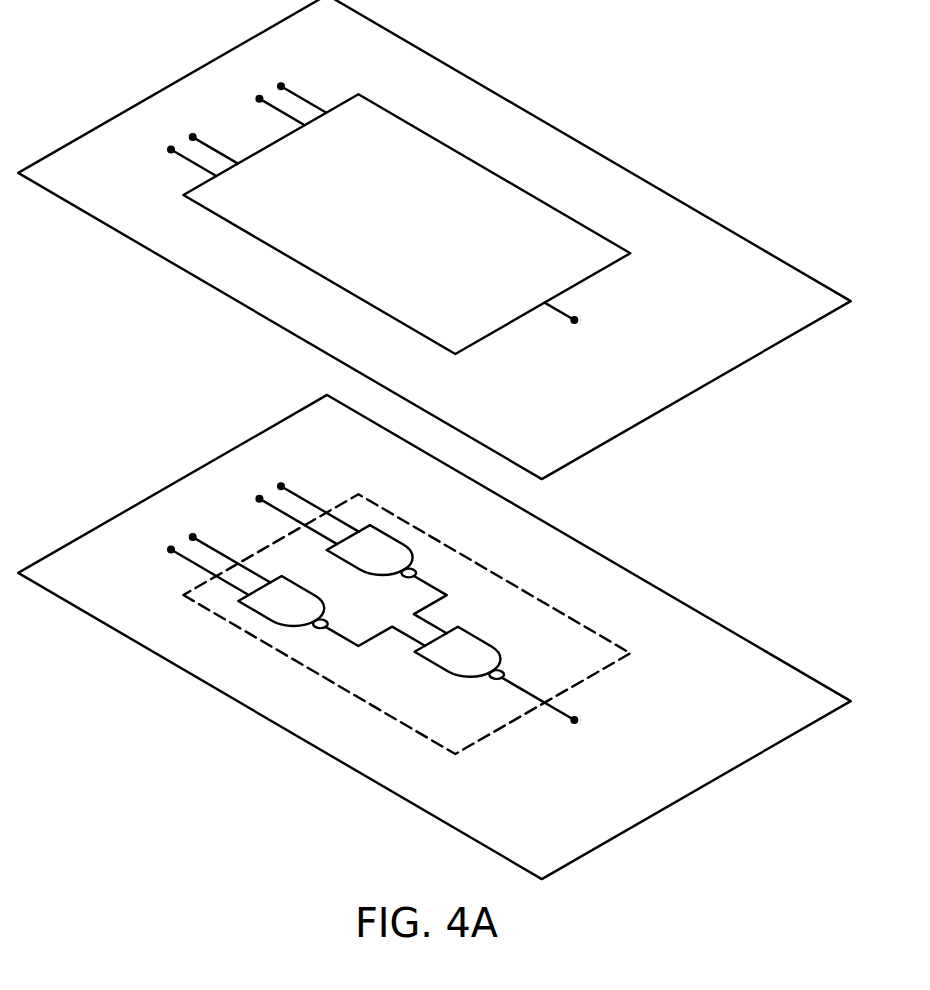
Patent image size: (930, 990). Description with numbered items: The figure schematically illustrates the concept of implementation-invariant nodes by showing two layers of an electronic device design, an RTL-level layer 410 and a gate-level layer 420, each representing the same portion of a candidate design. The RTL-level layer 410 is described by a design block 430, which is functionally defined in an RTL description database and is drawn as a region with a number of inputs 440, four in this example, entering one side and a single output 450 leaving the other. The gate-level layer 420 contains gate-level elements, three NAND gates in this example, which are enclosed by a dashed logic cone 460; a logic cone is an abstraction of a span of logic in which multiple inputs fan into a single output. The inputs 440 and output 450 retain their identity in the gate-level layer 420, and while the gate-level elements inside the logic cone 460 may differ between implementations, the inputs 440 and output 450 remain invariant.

The RTL-level layer 410 is at (170, 85).
The gate-level layer 420 is at (170, 485).
The design block 430 is at (358, 94).
The inputs 440 is at (171, 150).
The output 450 is at (578, 321).
The logic cone 460 is at (358, 494).